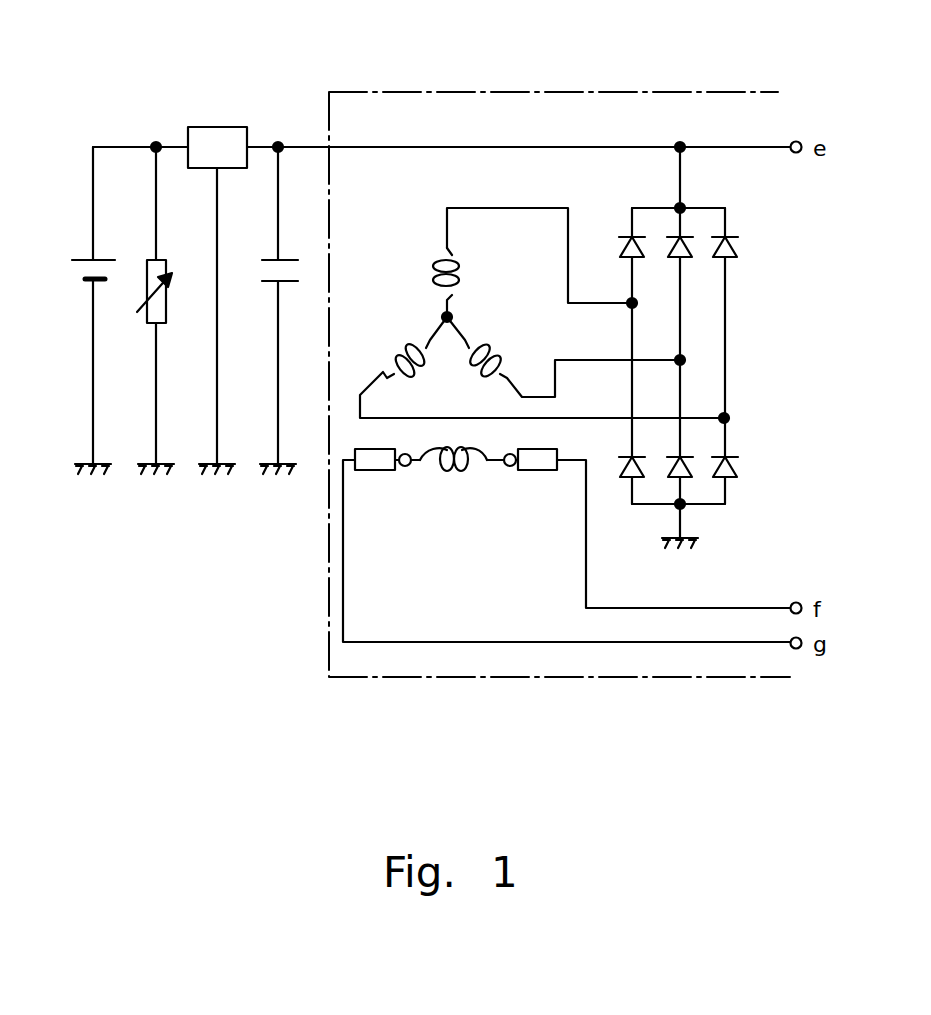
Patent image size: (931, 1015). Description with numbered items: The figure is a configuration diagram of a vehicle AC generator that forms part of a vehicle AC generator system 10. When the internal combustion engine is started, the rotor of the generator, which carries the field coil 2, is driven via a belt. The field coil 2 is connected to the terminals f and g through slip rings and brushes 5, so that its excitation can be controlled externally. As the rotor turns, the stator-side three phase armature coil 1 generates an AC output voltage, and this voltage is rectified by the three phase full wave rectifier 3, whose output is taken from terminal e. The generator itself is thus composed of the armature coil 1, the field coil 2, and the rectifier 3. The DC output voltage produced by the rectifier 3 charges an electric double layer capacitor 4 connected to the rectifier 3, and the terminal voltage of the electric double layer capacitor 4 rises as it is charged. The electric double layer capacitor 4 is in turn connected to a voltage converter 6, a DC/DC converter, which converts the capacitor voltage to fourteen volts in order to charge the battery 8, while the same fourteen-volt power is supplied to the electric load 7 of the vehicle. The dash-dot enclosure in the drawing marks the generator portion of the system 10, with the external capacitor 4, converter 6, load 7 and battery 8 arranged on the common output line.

The three phase armature coil 1 is at (425, 272).
The field coil 2 is at (448, 475).
The three phase full wave rectifier 3 is at (647, 195).
The electric double layer capacitor 4 is at (291, 256).
The brushes 5 is at (373, 470).
The voltage converter 6 is at (213, 126).
The electric load 7 is at (148, 257).
The battery 8 is at (80, 250).
The vehicle AC generator system 10 is at (718, 92).